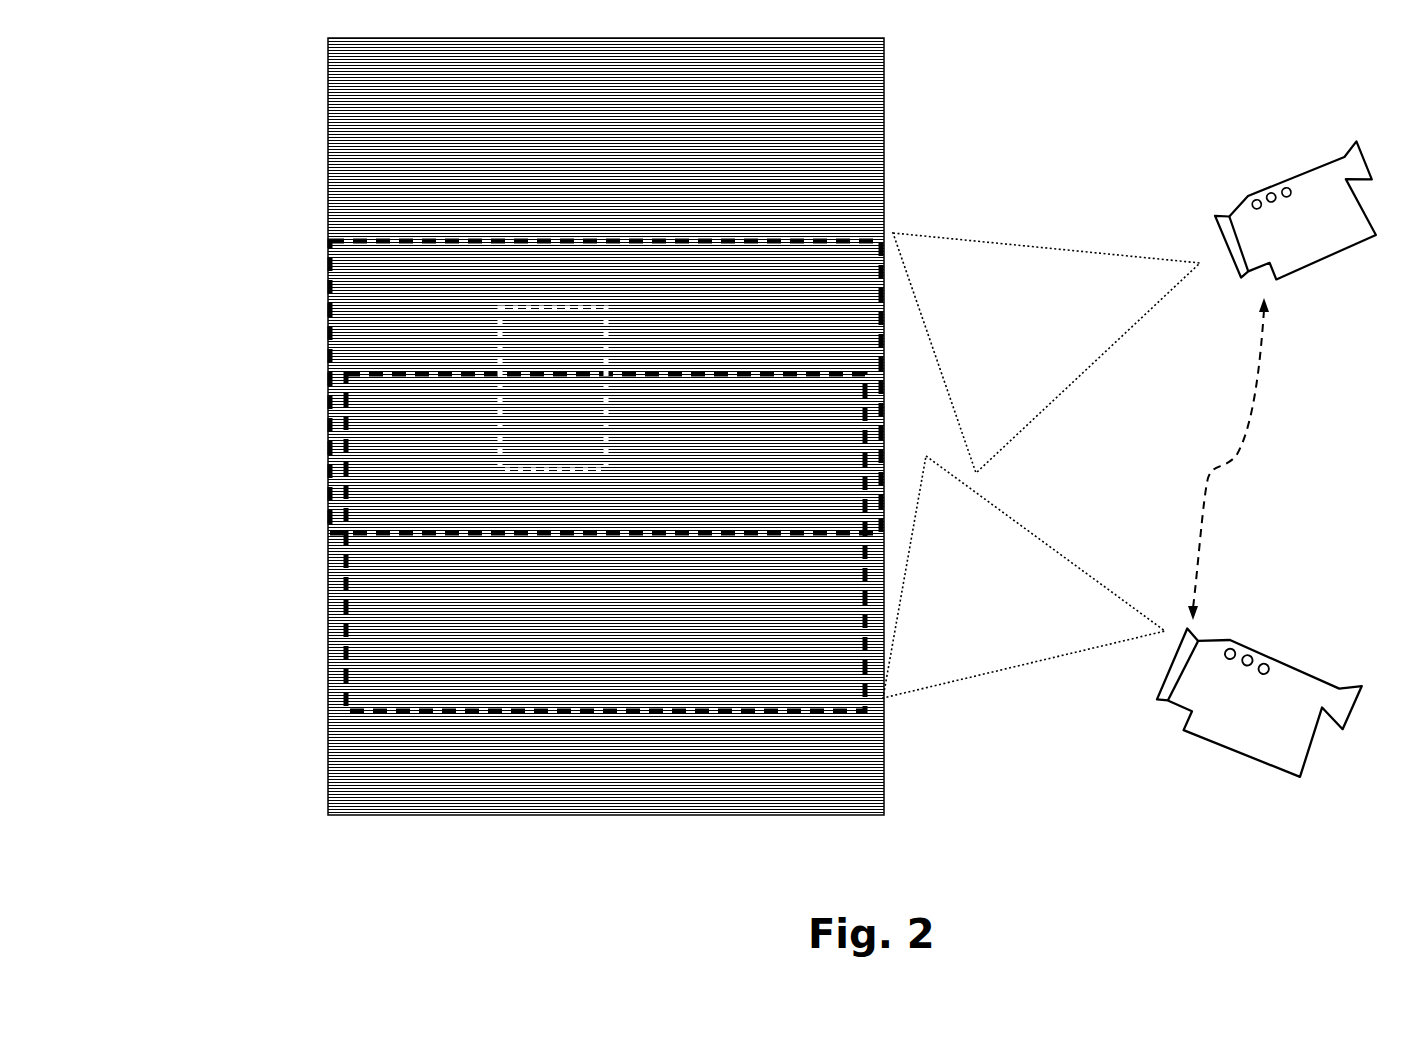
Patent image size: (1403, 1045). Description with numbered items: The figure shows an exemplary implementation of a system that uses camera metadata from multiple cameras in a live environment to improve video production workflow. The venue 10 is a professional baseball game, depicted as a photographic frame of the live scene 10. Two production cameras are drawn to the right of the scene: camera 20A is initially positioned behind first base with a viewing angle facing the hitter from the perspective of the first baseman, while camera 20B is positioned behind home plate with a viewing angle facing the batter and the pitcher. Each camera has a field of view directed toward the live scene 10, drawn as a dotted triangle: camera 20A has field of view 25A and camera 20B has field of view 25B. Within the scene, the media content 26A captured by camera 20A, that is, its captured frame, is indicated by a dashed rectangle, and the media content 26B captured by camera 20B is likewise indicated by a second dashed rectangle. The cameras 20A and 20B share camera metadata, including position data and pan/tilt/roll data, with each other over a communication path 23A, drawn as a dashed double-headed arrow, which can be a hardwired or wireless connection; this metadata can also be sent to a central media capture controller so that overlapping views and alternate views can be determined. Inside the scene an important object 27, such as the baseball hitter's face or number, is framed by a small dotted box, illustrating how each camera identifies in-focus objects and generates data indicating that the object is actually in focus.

The venue 10 is at (538, 802).
The camera 20A is at (1277, 160).
The camera 20B is at (1268, 630).
The communication path 23A is at (1222, 459).
The field of view 25A is at (1046, 353).
The field of view 25B is at (1024, 577).
The media content 26A is at (845, 230).
The media content 26B is at (340, 627).
The object 27 is at (492, 335).